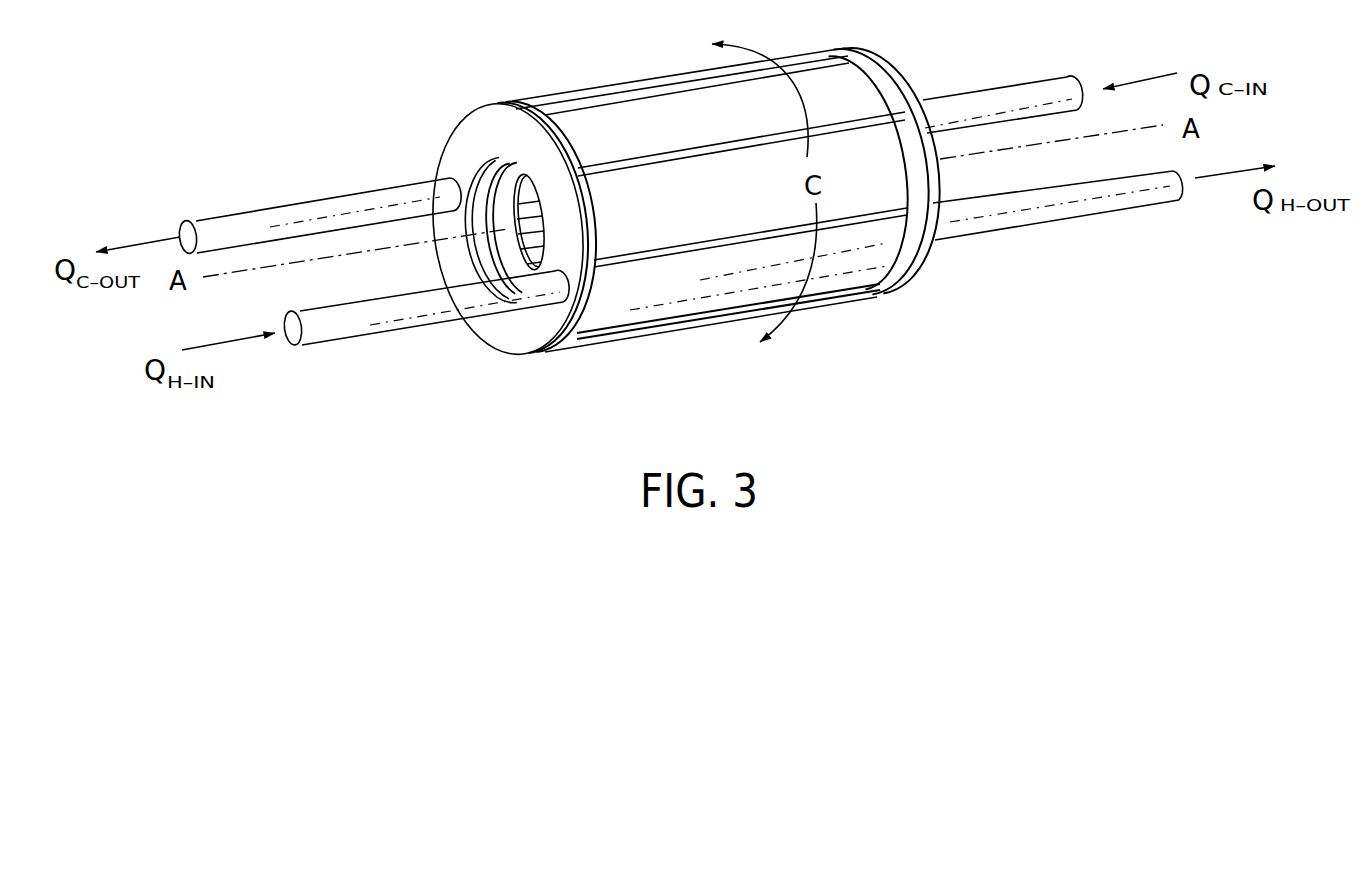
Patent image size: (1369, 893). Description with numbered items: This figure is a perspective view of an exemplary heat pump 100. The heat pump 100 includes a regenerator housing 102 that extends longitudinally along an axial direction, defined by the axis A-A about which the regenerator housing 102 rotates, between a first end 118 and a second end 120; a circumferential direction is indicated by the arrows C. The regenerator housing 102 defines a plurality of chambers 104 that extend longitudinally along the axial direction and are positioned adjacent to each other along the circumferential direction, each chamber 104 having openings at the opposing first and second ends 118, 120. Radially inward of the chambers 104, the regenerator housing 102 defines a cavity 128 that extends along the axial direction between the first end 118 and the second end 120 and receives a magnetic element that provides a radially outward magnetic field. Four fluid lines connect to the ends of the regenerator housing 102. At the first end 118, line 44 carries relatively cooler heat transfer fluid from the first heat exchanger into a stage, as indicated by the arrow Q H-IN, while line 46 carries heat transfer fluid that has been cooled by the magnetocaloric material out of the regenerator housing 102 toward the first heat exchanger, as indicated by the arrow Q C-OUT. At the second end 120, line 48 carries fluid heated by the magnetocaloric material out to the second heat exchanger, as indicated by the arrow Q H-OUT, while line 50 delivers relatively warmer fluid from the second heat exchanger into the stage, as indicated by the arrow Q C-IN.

The heat pump 100 is at (339, 89).
The regenerator housing 102 is at (827, 92).
The chambers 104 is at (616, 132).
The first end 118 is at (552, 73).
The second end 120 is at (878, 311).
The cavity 128 is at (505, 249).
The line 44 is at (333, 322).
The line 46 is at (300, 212).
The line 48 is at (1090, 200).
The line 50 is at (988, 100).